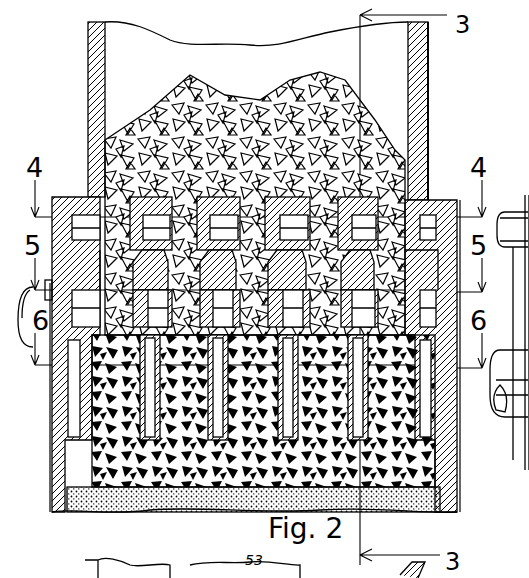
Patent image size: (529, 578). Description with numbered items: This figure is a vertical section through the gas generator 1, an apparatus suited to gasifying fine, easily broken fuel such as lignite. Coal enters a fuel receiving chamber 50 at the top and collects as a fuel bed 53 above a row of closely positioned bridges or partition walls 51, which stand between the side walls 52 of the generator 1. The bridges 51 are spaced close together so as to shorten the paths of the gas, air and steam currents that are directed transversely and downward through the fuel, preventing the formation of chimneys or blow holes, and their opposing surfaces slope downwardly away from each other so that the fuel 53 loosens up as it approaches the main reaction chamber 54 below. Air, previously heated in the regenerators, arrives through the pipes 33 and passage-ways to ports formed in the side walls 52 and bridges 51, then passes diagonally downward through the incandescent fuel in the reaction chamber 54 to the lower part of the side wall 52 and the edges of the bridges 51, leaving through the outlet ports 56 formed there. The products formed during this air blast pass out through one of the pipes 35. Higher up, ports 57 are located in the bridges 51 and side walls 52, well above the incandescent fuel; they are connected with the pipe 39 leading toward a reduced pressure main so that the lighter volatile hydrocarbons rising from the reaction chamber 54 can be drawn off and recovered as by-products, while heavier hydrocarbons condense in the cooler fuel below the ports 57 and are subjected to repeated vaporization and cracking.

The generator 1 is at (430, 105).
The pipes 33 is at (38, 335).
The pipes 35 is at (435, 345).
The pipe 39 is at (512, 212).
The fuel receiving chamber 50 is at (372, 78).
The bridges 51 is at (150, 172).
The side walls 52 is at (460, 322).
The fuel 53 is at (197, 128).
The main reaction chamber 54 is at (165, 435).
The outlet ports 56 is at (55, 512).
The ports 57 is at (93, 196).